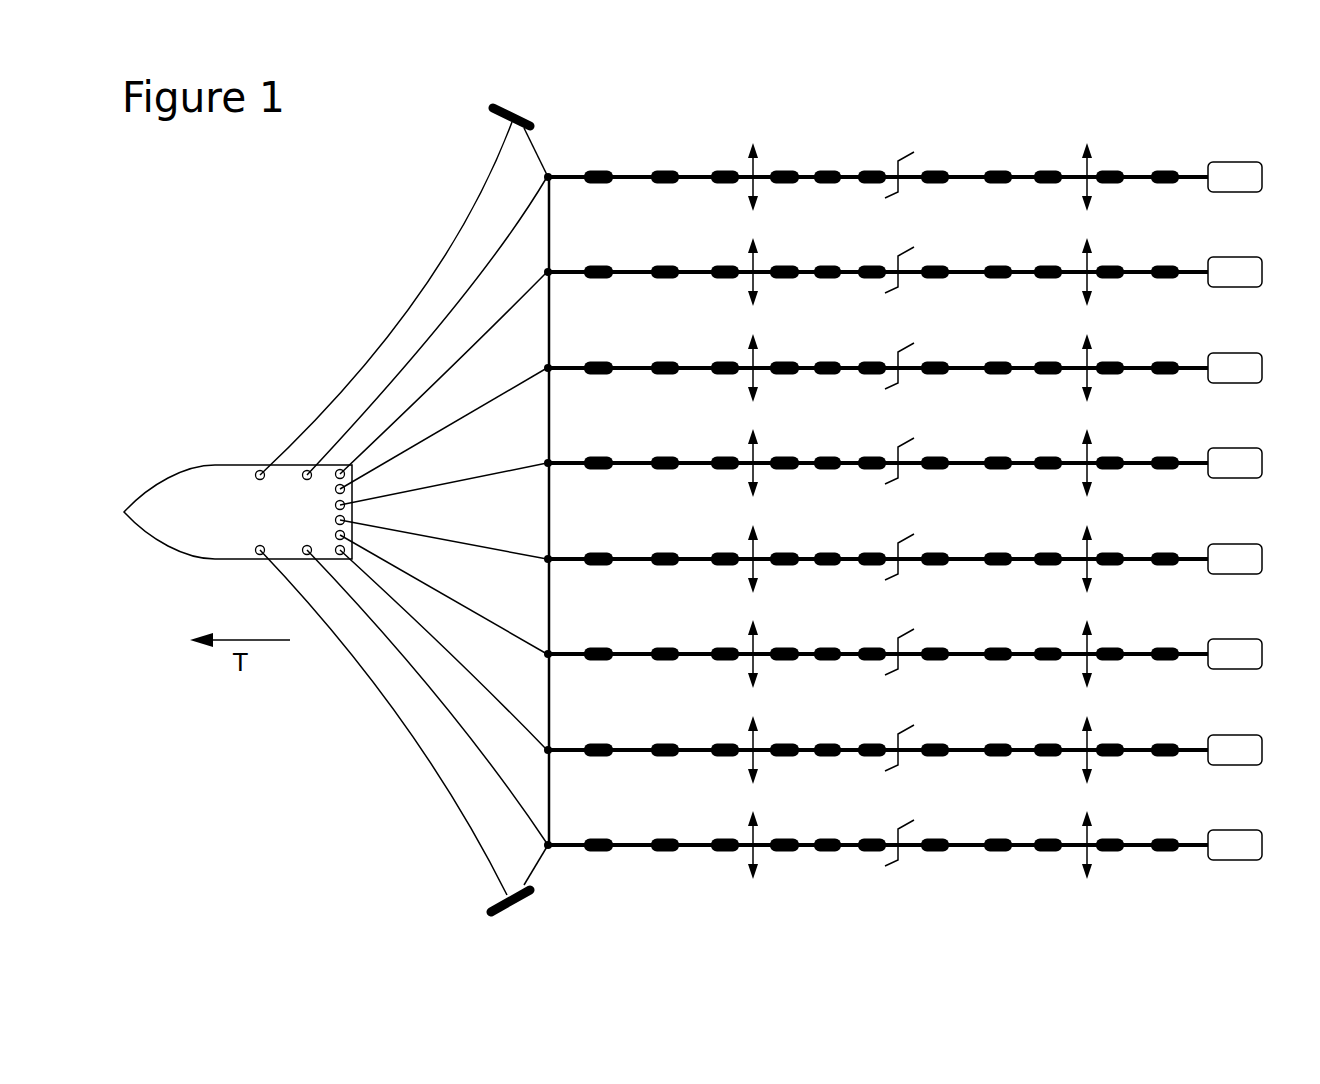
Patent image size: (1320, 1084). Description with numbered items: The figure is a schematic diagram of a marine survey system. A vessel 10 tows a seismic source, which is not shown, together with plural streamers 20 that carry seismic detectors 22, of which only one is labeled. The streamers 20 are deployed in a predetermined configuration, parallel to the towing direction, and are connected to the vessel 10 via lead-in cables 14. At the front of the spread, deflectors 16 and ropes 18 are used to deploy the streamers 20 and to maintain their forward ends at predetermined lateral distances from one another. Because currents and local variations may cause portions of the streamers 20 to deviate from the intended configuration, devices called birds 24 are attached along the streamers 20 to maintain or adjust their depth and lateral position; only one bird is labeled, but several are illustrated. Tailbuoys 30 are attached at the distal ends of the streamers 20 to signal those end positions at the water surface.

The vessel 10 is at (178, 470).
The lead-in cables 14 is at (523, 468).
The deflectors 16 is at (495, 108).
The ropes 18 is at (576, 511).
The streamers 20 is at (878, 494).
The seismic detectors 22 is at (881, 485).
The birds 24 is at (920, 496).
The tailbuoys 30 is at (1243, 488).